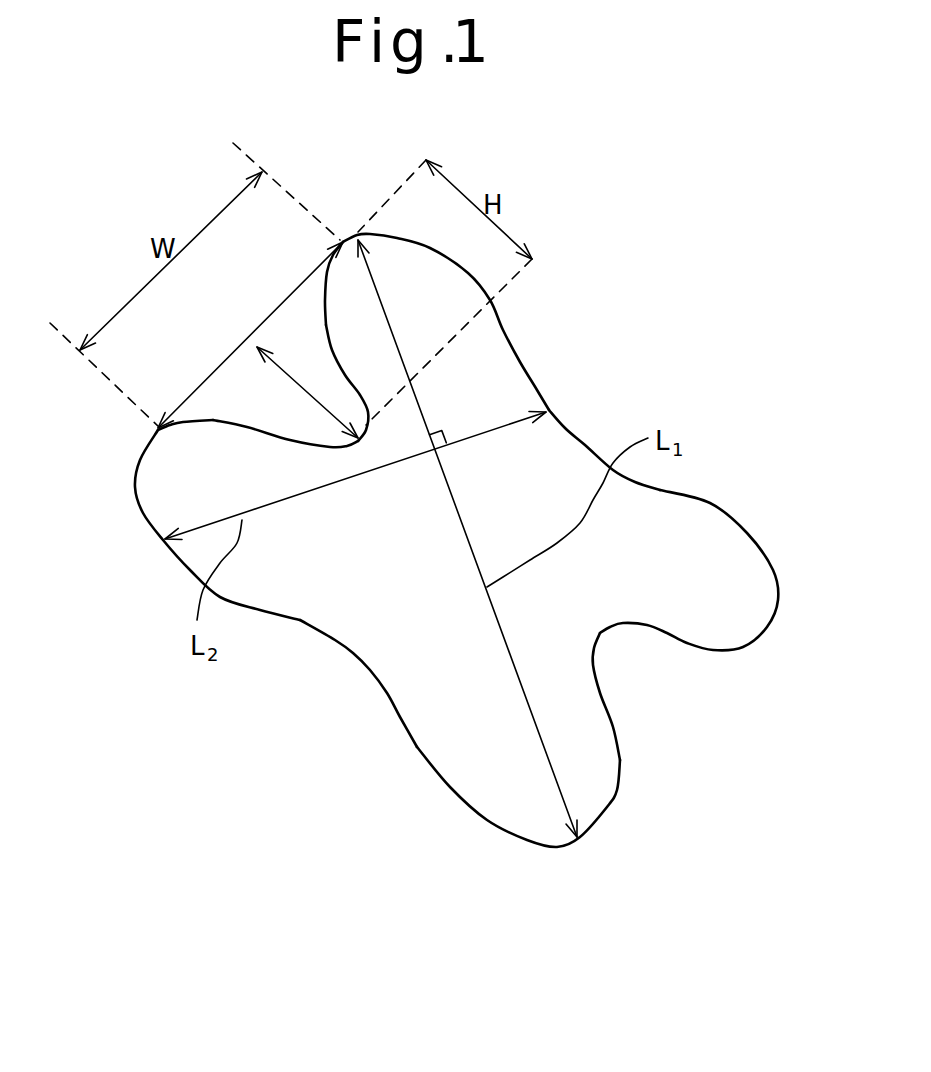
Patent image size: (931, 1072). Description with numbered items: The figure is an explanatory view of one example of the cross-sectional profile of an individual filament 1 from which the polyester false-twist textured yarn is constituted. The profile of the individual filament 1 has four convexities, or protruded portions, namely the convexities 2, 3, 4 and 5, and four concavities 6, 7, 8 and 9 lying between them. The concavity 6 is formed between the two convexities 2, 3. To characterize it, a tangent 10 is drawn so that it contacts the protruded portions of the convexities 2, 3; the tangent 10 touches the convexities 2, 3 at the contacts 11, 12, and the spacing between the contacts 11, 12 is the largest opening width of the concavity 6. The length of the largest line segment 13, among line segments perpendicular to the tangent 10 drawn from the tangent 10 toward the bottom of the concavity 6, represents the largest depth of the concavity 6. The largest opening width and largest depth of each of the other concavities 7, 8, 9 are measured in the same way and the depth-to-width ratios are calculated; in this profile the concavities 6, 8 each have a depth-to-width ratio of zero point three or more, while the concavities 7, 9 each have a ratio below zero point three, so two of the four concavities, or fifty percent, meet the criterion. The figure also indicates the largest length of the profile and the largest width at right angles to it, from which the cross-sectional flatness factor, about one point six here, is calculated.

The individual filament 1 is at (436, 516).
The convexity 2 is at (403, 277).
The convexity 3 is at (135, 493).
The convexity 4 is at (527, 810).
The convexity 5 is at (750, 588).
The concavity 6 is at (358, 432).
The concavity 7 is at (353, 653).
The concavity 8 is at (600, 640).
The concavity 9 is at (583, 445).
The tangent 10 is at (263, 322).
The contact 11 is at (343, 240).
The contact 12 is at (157, 430).
The largest line segment 13 is at (287, 370).